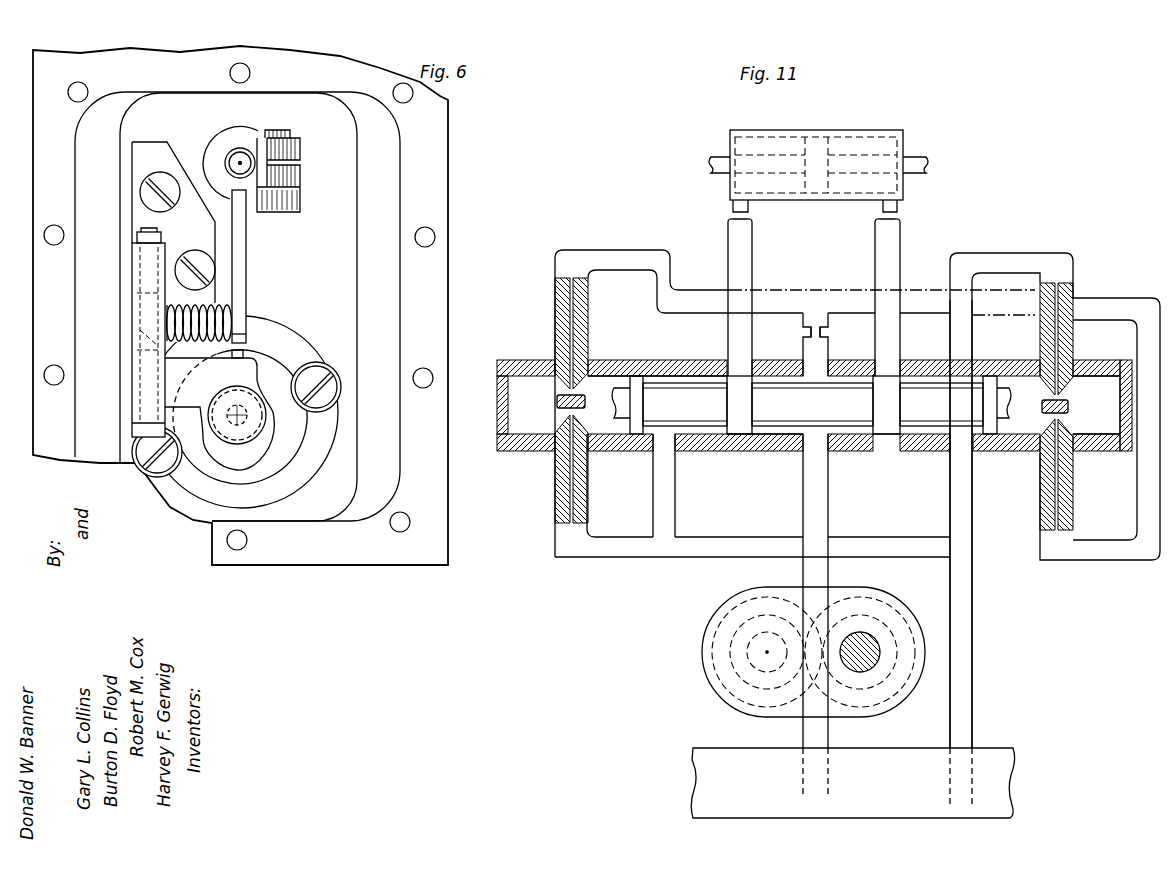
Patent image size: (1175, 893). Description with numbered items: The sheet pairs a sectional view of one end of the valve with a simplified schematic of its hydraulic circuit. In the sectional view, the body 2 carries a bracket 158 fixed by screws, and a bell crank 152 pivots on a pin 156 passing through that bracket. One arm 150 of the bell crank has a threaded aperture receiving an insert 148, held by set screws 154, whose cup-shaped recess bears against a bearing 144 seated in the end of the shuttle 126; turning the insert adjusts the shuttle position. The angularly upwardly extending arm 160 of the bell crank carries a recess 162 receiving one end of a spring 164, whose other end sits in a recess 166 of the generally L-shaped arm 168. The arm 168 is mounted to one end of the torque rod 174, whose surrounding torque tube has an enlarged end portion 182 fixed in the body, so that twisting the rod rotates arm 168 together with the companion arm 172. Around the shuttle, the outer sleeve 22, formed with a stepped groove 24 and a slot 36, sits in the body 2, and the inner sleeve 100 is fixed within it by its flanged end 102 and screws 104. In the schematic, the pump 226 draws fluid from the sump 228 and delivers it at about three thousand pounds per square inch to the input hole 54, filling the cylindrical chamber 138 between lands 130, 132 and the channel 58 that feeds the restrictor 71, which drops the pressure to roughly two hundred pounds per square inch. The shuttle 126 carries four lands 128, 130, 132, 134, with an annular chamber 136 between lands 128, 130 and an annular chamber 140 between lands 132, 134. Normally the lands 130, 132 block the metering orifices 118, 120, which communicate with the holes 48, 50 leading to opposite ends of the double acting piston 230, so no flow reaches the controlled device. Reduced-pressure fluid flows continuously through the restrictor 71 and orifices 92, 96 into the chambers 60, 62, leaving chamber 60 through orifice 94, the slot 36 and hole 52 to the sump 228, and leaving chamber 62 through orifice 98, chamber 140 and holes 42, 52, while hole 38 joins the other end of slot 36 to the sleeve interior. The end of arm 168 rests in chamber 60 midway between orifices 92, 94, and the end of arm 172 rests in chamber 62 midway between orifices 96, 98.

In FIG. 6, the body 2 is at (446, 513).
In FIG. 6, the outer sleeve 22 is at (316, 482).
In FIG. 6, the inner sleeve 100 is at (259, 482).
In FIG. 6, the flanged end 102 is at (332, 433).
In FIG. 6, the screws 104 is at (338, 364).
In FIG. 6, the bearing 144 is at (257, 427).
In FIG. 6, the insert 148 is at (251, 436).
In FIG. 6, the arm 150 is at (253, 367).
In FIG. 6, the bell crank 152 is at (130, 396).
In FIG. 6, the set screws 154 is at (279, 328).
In FIG. 6, the pin 156 is at (140, 232).
In FIG. 6, the bracket 158 is at (140, 163).
In FIG. 6, the arm 160 is at (132, 300).
In FIG. 6, the recess 162 is at (132, 327).
In FIG. 6, the spring 164 is at (220, 300).
In FIG. 6, the recess 166 is at (250, 314).
In FIG. 6, the L-shaped arm 168 is at (247, 243).
In FIG. 11, the L-shaped arm 168 is at (557, 401).
In FIG. 6, the torque rod 174 is at (241, 150).
In FIG. 6, the enlarged end portion 182 is at (215, 143).
In FIG. 11, the stepped groove 24 is at (620, 262).
In FIG. 11, the slot 36 is at (882, 547).
In FIG. 11, the hole 38 is at (665, 503).
In FIG. 11, the hole 42 is at (962, 504).
In FIG. 11, the hole 48 is at (752, 232).
In FIG. 11, the hole 50 is at (876, 232).
In FIG. 11, the hole 52 is at (968, 677).
In FIG. 11, the input hole 54 is at (820, 494).
In FIG. 11, the channel 58 is at (810, 347).
In FIG. 11, the chamber 60 is at (523, 373).
In FIG. 11, the chamber 62 is at (1107, 377).
In FIG. 11, the restrictor 71 is at (815, 324).
In FIG. 11, the orifice 92 is at (586, 385).
In FIG. 11, the orifice 94 is at (565, 414).
In FIG. 11, the orifice 96 is at (1068, 418).
In FIG. 11, the orifice 98 is at (1047, 390).
In FIG. 11, the metering orifice 118 is at (737, 362).
In FIG. 11, the metering orifice 120 is at (892, 362).
In FIG. 11, the shuttle member 126 is at (624, 422).
In FIG. 11, the land 128 is at (643, 403).
In FIG. 11, the land 130 is at (740, 434).
In FIG. 11, the land 132 is at (888, 434).
In FIG. 11, the land 134 is at (992, 399).
In FIG. 11, the bore 136 is at (677, 380).
In FIG. 11, the cylindrical chamber 138 is at (785, 440).
In FIG. 11, the annular chamber 140 is at (962, 432).
In FIG. 11, the L-shaped arm 172 is at (1068, 403).
In FIG. 11, the pump 226 is at (702, 660).
In FIG. 11, the sump 228 is at (729, 750).
In FIG. 11, the double acting piston 230 is at (904, 141).